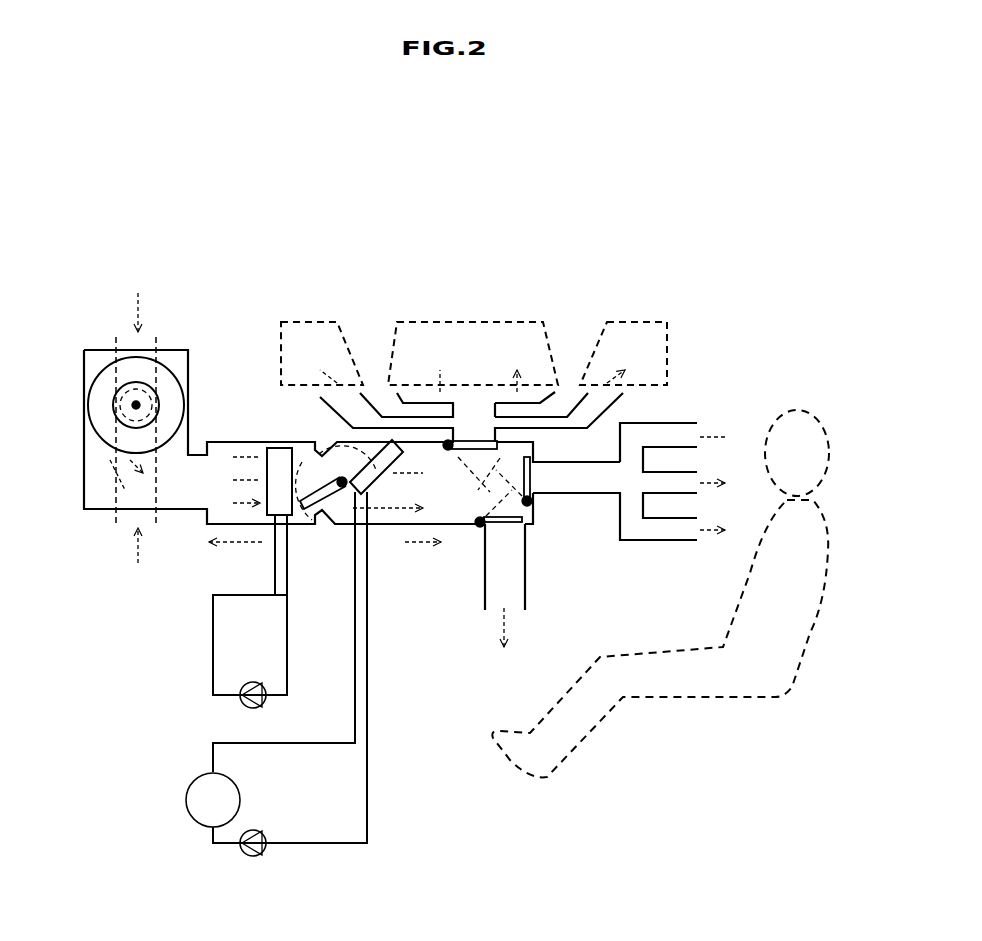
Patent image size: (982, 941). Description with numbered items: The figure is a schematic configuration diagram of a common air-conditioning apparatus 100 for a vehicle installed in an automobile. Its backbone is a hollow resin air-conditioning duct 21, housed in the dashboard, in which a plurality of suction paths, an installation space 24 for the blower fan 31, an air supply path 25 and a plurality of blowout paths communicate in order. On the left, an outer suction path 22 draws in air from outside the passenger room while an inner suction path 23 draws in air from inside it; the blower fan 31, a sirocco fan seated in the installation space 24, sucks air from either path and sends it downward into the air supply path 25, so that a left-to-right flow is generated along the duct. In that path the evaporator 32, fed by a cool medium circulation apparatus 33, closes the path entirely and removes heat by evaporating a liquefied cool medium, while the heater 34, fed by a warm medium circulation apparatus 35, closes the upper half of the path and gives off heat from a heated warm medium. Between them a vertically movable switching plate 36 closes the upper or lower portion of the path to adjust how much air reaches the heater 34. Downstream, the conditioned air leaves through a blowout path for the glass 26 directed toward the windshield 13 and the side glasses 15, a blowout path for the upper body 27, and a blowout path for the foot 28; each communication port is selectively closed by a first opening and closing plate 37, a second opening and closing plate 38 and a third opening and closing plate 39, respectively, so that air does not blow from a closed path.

The common air-conditioning apparatus for a vehicle 100 is at (457, 812).
The windshield 13 is at (480, 338).
The side glass 15 is at (313, 333).
The air-conditioning duct 21 is at (230, 418).
The outer suction path 22 is at (130, 330).
The inner suction path 23 is at (128, 527).
The installation space 24 is at (158, 503).
The air supply path 25 is at (228, 520).
The blowout path for the glass 26 is at (500, 428).
The blowout path for the upper body 27 is at (597, 495).
The blowout path for the foot 28 is at (523, 588).
The blower fan 31 is at (90, 403).
The evaporator 32 is at (283, 460).
The cool medium circulation apparatus 33 is at (213, 633).
The heater 34 is at (375, 467).
The warm medium circulation apparatus 35 is at (213, 748).
The switching plate 36 is at (305, 512).
The first opening and closing plate 37 is at (472, 440).
The second opening and closing plate 38 is at (532, 492).
The third opening and closing plate 39 is at (485, 533).